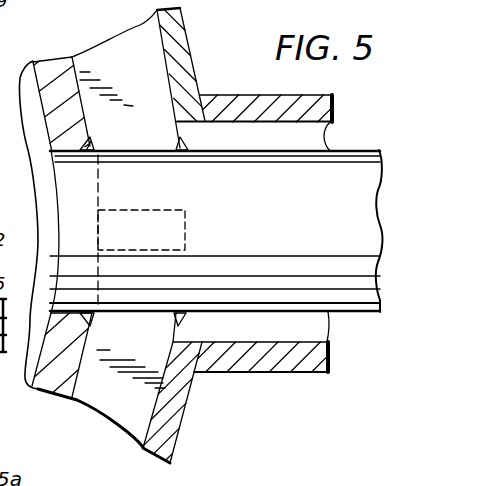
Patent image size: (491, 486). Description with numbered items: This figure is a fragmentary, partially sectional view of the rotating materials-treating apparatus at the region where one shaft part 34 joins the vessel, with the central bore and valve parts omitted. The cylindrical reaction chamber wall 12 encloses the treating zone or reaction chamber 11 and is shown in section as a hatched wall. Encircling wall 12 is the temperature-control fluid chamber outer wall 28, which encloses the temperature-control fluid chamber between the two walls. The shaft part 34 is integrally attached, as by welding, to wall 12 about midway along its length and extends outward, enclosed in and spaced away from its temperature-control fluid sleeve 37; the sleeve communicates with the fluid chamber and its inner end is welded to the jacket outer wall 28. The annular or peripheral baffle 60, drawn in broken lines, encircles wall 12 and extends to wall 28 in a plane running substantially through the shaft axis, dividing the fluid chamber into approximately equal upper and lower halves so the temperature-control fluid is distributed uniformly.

The treating zone or reaction chamber 11 is at (44, 207).
The reaction chamber wall 12 is at (58, 70).
The temperature-control fluid chamber outer wall 28 is at (193, 62).
The shaft part 34 is at (347, 172).
The temperature-control fluid sleeve 37 is at (325, 95).
The annular baffle 60 is at (120, 53).